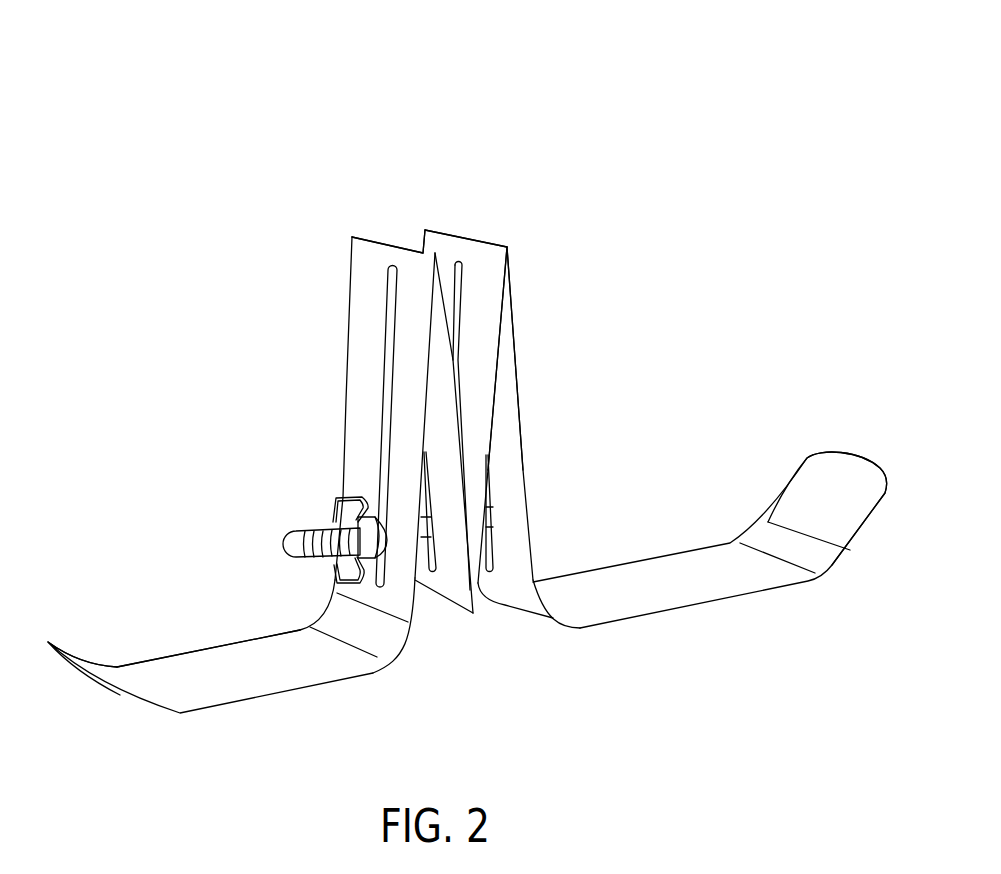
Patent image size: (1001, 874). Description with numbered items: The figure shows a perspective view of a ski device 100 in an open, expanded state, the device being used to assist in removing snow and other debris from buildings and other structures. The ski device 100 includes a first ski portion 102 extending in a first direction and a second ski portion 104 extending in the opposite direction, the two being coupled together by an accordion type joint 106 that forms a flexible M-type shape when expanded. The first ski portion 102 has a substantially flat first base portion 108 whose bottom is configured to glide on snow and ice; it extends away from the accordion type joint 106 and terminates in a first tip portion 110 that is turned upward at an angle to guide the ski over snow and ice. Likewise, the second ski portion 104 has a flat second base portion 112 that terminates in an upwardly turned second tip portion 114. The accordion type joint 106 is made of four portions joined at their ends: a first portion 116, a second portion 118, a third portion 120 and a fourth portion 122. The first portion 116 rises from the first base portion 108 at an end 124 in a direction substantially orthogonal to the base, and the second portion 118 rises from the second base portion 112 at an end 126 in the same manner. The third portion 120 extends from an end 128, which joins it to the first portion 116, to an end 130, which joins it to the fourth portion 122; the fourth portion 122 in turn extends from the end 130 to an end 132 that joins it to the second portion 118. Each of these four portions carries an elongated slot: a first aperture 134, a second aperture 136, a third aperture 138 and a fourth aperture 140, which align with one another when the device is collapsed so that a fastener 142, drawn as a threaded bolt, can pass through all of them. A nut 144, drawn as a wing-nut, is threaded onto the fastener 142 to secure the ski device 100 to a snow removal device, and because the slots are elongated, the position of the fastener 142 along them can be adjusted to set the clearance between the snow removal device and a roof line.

The ski device 100 is at (233, 72).
The first ski portion 102 is at (643, 617).
The second ski portion 104 is at (270, 698).
The accordion type joint 106 is at (518, 232).
The first base portion 108 is at (677, 565).
The first tip portion 110 is at (837, 465).
The second base portion 112 is at (165, 672).
The second tip portion 114 is at (75, 648).
The first portion 116 is at (520, 447).
The second portion 118 is at (353, 333).
The third portion 120 is at (483, 392).
The fourth portion 122 is at (450, 588).
The end 124 is at (537, 615).
The end 126 is at (372, 648).
The end 128 is at (507, 247).
The end 130 is at (473, 615).
The end 132 is at (350, 237).
The first aperture 134 is at (493, 543).
The second aperture 136 is at (383, 291).
The third aperture 138 is at (462, 340).
The fourth aperture 140 is at (430, 592).
The fastener 142 is at (292, 538).
The nut 144 is at (340, 495).